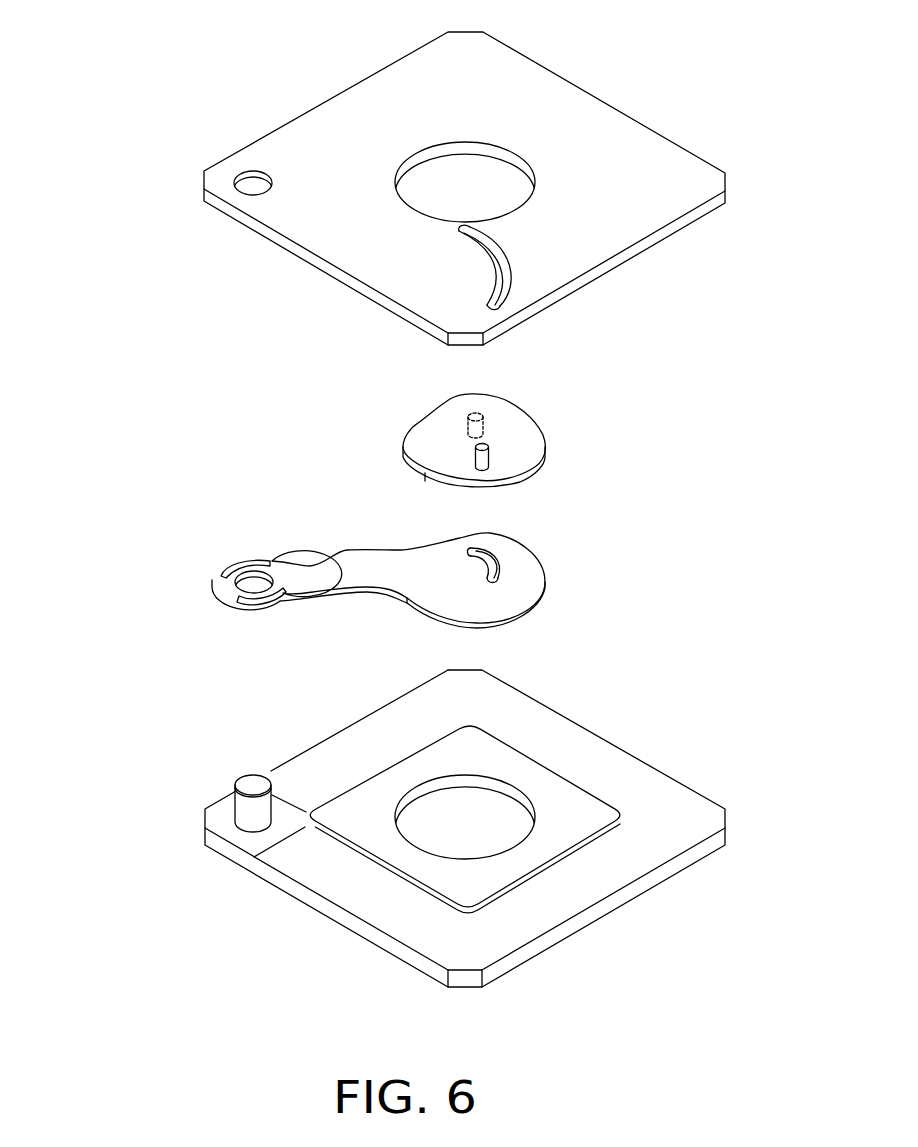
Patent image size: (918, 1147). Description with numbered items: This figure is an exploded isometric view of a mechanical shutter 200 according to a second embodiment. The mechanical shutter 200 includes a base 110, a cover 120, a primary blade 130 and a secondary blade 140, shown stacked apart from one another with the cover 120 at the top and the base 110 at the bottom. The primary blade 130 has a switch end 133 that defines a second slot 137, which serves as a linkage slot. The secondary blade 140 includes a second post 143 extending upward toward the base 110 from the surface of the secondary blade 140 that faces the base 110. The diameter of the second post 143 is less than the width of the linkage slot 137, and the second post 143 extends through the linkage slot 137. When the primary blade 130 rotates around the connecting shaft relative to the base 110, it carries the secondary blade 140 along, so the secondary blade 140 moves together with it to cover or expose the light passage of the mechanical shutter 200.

The mechanical shutter 200 is at (145, 75).
The cover 120 is at (602, 133).
The secondary blade 140 is at (425, 433).
The second post 143 is at (480, 425).
The primary blade 130 is at (318, 523).
The switch end 133 is at (520, 578).
The second slot 137 is at (495, 565).
The base 110 is at (648, 792).